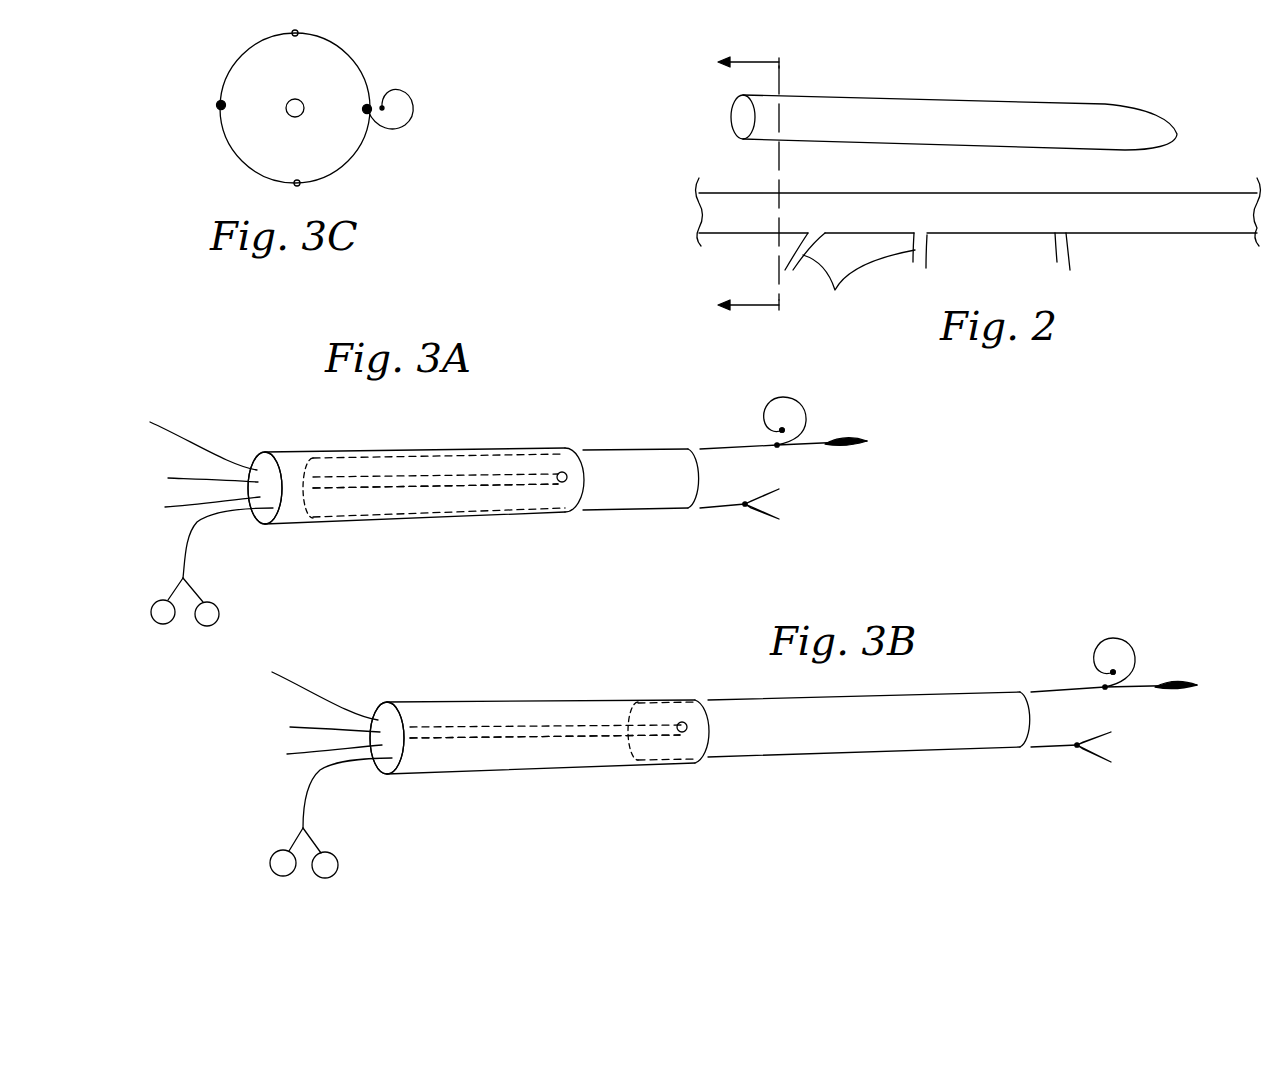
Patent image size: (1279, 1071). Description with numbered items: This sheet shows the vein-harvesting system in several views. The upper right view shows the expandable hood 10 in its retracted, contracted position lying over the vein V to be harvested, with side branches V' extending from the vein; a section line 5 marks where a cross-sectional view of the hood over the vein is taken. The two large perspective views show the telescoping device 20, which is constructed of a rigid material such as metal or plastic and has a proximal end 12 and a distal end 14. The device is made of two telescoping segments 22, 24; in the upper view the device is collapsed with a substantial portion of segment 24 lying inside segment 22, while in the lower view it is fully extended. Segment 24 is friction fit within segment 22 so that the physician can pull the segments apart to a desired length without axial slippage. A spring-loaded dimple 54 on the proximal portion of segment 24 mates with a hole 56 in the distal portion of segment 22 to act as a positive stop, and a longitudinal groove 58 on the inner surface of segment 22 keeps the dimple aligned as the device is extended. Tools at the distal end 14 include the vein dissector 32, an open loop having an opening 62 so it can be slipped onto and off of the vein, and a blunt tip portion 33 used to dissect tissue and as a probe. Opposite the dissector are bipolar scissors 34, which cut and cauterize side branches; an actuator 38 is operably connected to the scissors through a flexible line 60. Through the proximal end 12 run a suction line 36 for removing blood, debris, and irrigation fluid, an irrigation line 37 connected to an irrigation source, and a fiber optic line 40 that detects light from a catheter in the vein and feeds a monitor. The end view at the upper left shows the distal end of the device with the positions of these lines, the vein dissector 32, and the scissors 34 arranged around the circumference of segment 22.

In FIG. 2, the section line 5- 5 is at (748, 182).
In FIG. 2, the expandable hood 10 is at (1095, 102).
In FIG. 2, the vein V is at (978, 236).
In FIG. 2, the side branches V' is at (859, 285).
In FIG. 3C, the proximal end 12 is at (295, 108).
In FIG. 3A, the proximal end 12 is at (250, 458).
In FIG. 3B, the proximal end 12 is at (372, 712).
In FIG. 3A, the distal end 14 is at (688, 508).
In FIG. 3B, the distal end 14 is at (1017, 748).
In FIG. 3A, the telescoping device 20 is at (444, 420).
In FIG. 3B, the telescoping device 20 is at (566, 668).
In FIG. 3A, the first telescoping segment 22 is at (333, 523).
In FIG. 3B, the first telescoping segment 22 is at (452, 772).
In FIG. 3A, the second telescoping segment 24 is at (648, 510).
In FIG. 3B, the second telescoping segment 24 is at (980, 748).
In FIG. 3C, the vein dissector 32 is at (403, 90).
In FIG. 3A, the vein dissector 32 is at (796, 402).
In FIG. 3B, the vein dissector 32 is at (1126, 644).
In FIG. 3C, the blunt tip portion 33 is at (362, 105).
In FIG. 3A, the blunt tip portion 33 is at (848, 441).
In FIG. 3B, the blunt tip portion 33 is at (1180, 685).
In FIG. 3C, the bipolar scissors 34 is at (223, 112).
In FIG. 3A, the bipolar scissors 34 is at (770, 518).
In FIG. 3B, the bipolar scissors 34 is at (1103, 764).
In FIG. 3C, the suction line 36 is at (293, 180).
In FIG. 3A, the suction line 36 is at (170, 478).
In FIG. 3B, the suction line 36 is at (292, 727).
In FIG. 3C, the irrigation line 37 is at (293, 38).
In FIG. 3A, the irrigation line 37 is at (166, 425).
In FIG. 3B, the irrigation line 37 is at (287, 674).
In FIG. 3A, the actuator 38 is at (206, 590).
In FIG. 3B, the actuator 38 is at (325, 843).
In FIG. 3C, the fiber optic line 40 is at (302, 116).
In FIG. 3A, the fiber optic line 40 is at (177, 507).
In FIG. 3B, the fiber optic line 40 is at (298, 757).
In FIG. 3A, the spring-loaded dimple 54 is at (325, 452).
In FIG. 3B, the spring-loaded dimple 54 is at (672, 720).
In FIG. 3A, the hole 56 is at (564, 471).
In FIG. 3B, the hole 56 is at (684, 721).
In FIG. 3A, the longitudinal groove 58 is at (430, 492).
In FIG. 3B, the longitudinal groove 58 is at (550, 742).
In FIG. 3A, the flexible line 60 is at (205, 531).
In FIG. 3B, the flexible line 60 is at (322, 778).
In FIG. 3A, the opening 62 is at (778, 437).
In FIG. 3B, the opening 62 is at (1107, 680).